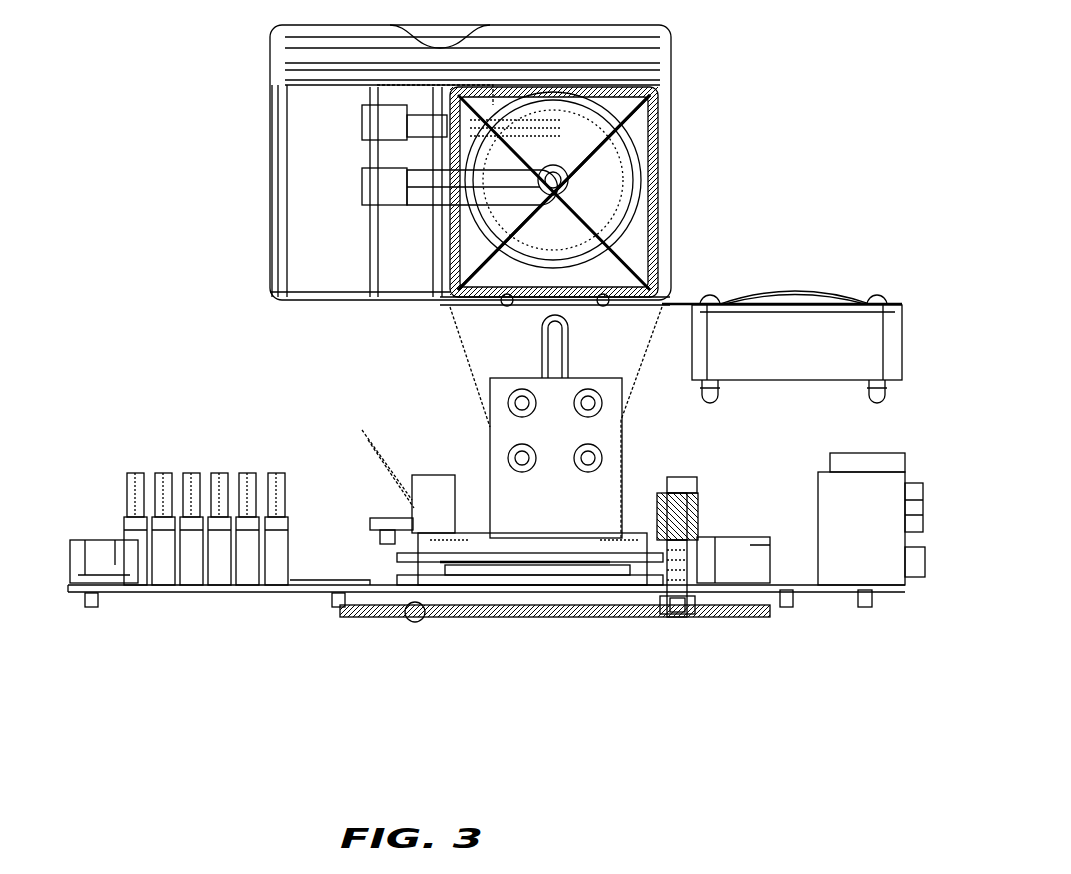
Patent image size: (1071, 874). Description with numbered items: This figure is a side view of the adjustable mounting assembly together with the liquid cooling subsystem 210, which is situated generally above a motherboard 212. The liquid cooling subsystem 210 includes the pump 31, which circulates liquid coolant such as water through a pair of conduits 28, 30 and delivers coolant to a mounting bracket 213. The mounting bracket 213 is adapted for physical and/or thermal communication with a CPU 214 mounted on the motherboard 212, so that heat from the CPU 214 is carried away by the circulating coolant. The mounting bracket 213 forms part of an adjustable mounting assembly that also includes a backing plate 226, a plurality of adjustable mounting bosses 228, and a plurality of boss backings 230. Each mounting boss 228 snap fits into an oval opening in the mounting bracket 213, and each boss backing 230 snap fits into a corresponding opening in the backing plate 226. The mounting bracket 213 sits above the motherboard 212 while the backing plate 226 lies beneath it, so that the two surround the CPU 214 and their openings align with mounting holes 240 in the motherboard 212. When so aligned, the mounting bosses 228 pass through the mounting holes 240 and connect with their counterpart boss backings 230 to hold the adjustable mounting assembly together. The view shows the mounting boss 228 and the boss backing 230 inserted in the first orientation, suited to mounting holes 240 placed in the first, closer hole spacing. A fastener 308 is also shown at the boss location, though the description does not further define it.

The liquid cooling subsystem 210 is at (690, 138).
The conduit 30 is at (336, 129).
The conduit 28 is at (296, 205).
The pump 31 is at (496, 218).
The mounting bracket 213 is at (620, 470).
The motherboard 212 is at (293, 587).
The adjustable mounting boss 228 is at (524, 475).
The fastener 308 is at (734, 512).
The CPU 214 is at (515, 632).
The backing plate 226 is at (572, 618).
The boss backing 230 is at (727, 630).
The mounting hole 240 is at (743, 636).